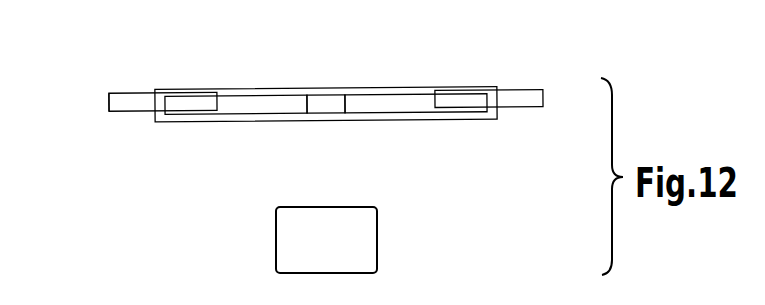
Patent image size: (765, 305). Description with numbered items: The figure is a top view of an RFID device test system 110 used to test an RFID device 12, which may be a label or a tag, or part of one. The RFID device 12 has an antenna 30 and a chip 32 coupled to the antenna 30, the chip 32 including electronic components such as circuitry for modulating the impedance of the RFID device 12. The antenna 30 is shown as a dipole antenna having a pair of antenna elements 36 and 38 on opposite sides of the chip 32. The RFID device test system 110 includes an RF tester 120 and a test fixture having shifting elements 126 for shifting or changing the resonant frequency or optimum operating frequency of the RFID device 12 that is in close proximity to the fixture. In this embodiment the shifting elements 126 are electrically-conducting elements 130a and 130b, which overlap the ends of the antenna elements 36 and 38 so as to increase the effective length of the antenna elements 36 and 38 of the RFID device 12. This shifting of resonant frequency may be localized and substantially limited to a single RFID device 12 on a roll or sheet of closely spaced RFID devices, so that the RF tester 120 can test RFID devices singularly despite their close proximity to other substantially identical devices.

The RFID device test system 110 is at (108, 57).
The electrically-conducting element 130a is at (132, 100).
The electrically-conducting element 130b is at (448, 98).
The shifting elements 126 is at (100, 109).
The antenna 30 is at (142, 127).
The RFID device 12 is at (505, 117).
The antenna element 36 is at (245, 103).
The chip 32 is at (327, 103).
The antenna element 38 is at (387, 103).
The RF tester 120 is at (378, 232).